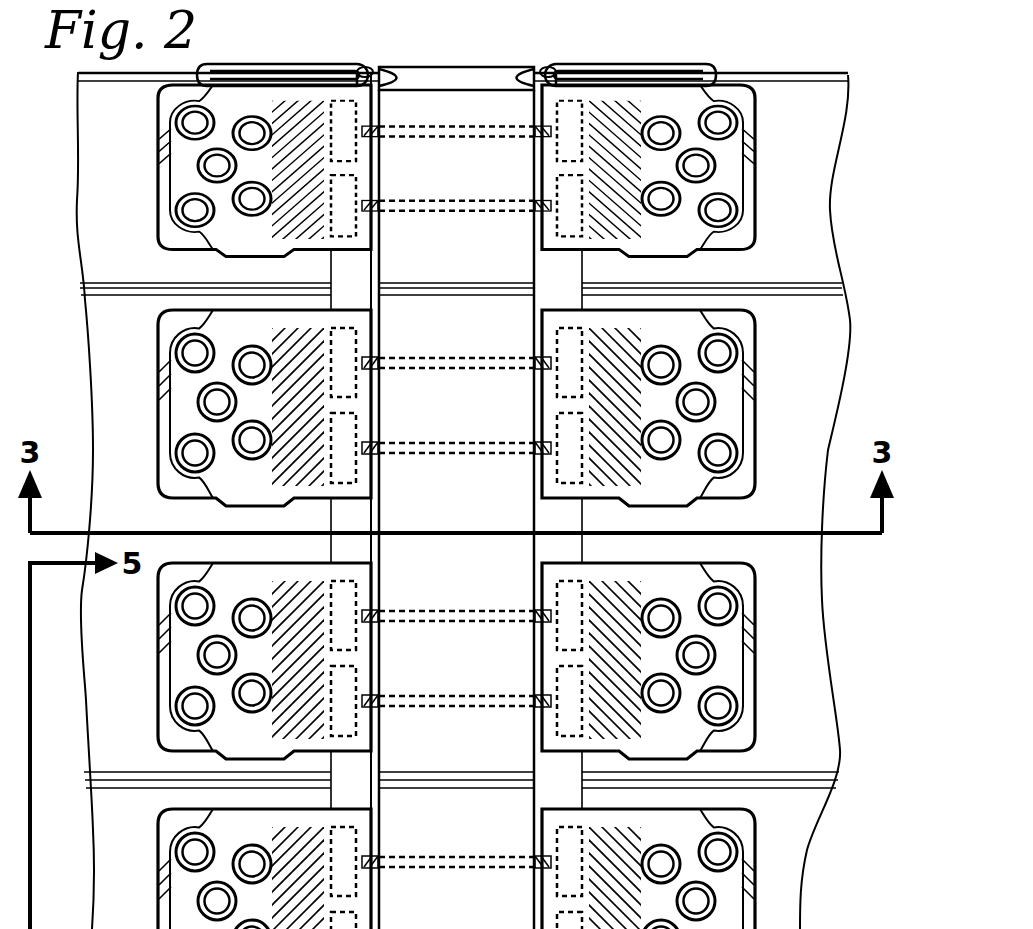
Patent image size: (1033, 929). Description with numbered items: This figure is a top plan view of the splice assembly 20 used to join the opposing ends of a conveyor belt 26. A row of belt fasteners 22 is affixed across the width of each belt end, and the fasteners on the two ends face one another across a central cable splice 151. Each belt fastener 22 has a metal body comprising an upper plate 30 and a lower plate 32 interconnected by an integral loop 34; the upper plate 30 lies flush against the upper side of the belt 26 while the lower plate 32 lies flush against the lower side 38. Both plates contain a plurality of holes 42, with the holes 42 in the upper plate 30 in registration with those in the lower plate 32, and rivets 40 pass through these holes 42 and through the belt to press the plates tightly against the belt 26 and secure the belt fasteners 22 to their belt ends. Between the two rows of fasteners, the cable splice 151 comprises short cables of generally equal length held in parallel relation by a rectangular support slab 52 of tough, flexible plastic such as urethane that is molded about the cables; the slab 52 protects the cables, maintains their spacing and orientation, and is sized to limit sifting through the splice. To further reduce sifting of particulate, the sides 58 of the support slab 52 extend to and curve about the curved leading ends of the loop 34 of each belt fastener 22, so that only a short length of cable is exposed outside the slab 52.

The splice assembly 20 is at (500, 56).
The belt fastener 22 is at (322, 94).
The belt 26 is at (90, 155).
The upper plate 30 is at (281, 100).
The lower plate 32 is at (228, 64).
The integral loop 34 is at (366, 68).
The lower side 38 is at (95, 243).
The rivet 40 is at (245, 198).
The hole 42 is at (207, 117).
The support slab 52 is at (450, 103).
The side of support slab 58 is at (373, 270).
The cable splice 151 is at (420, 58).